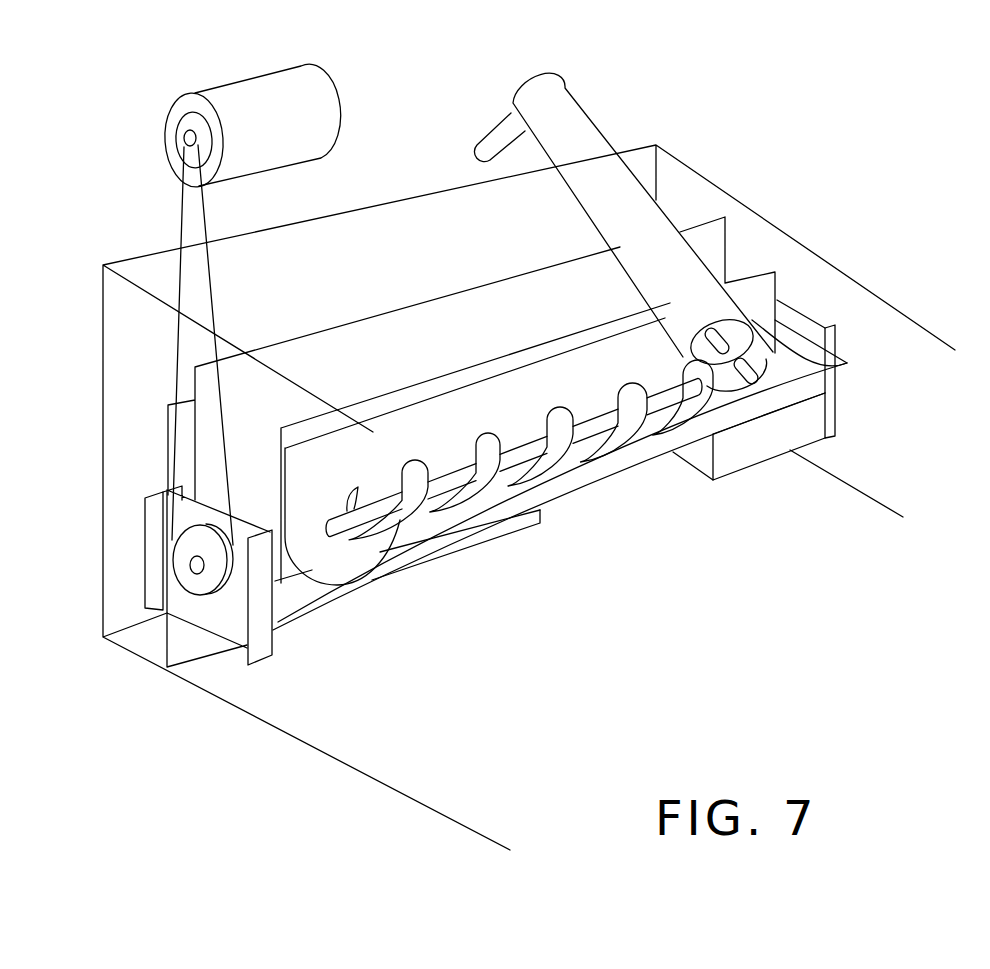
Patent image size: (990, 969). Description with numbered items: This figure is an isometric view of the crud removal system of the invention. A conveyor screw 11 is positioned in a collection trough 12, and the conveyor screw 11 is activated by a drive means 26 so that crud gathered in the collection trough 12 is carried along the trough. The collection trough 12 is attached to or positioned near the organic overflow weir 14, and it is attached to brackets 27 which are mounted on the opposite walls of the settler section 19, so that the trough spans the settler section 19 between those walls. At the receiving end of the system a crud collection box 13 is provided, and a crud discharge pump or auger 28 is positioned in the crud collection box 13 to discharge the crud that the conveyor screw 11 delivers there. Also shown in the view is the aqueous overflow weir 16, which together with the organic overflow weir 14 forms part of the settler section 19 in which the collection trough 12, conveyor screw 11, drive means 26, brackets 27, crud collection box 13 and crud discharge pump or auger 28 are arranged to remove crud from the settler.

The conveyor screw 11 is at (590, 460).
The collection trough 12 is at (405, 553).
The crud collection box 13 is at (810, 420).
The organic overflow weir 14 is at (373, 432).
The aqueous overflow weir 16 is at (167, 428).
The settler section 19 is at (147, 297).
The drive means 26 is at (252, 78).
The brackets 27 is at (838, 342).
The crud discharge pump or auger 28 is at (607, 132).